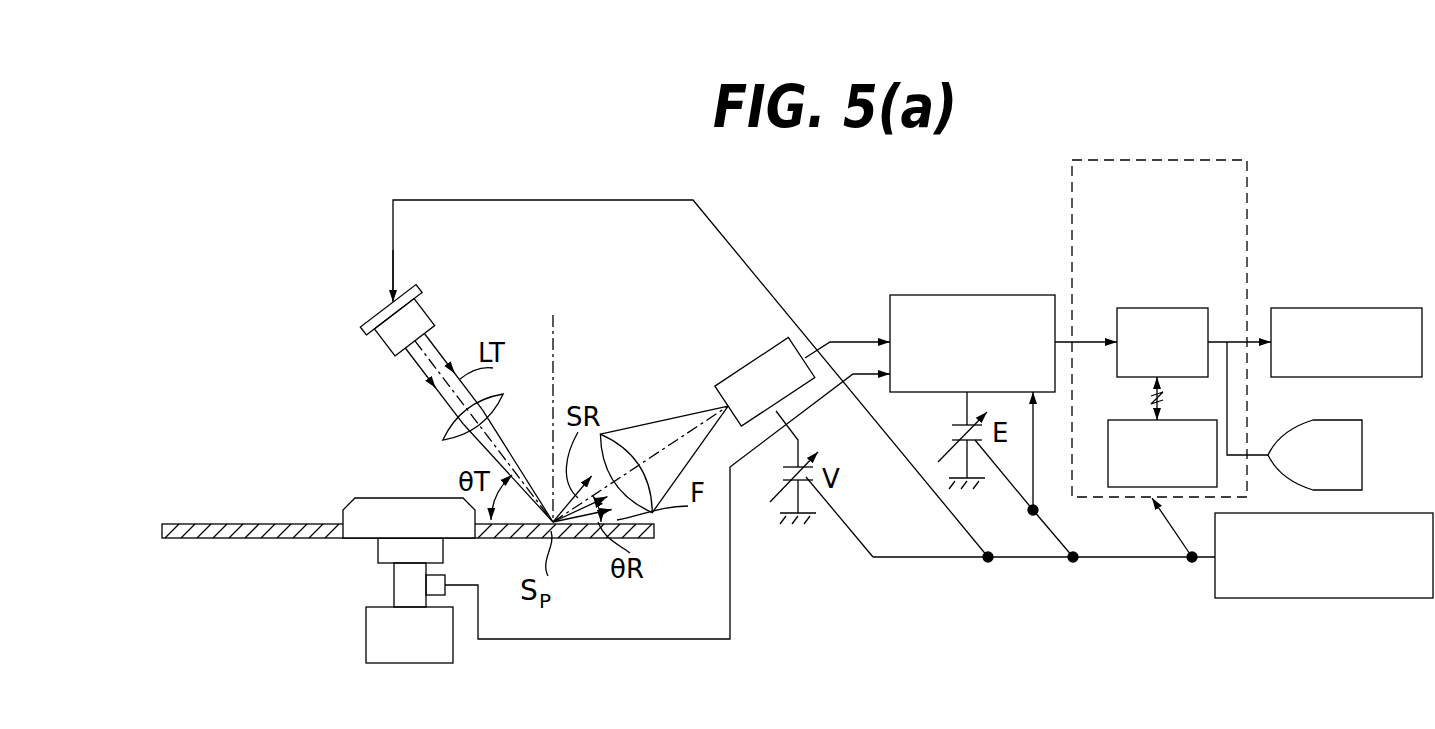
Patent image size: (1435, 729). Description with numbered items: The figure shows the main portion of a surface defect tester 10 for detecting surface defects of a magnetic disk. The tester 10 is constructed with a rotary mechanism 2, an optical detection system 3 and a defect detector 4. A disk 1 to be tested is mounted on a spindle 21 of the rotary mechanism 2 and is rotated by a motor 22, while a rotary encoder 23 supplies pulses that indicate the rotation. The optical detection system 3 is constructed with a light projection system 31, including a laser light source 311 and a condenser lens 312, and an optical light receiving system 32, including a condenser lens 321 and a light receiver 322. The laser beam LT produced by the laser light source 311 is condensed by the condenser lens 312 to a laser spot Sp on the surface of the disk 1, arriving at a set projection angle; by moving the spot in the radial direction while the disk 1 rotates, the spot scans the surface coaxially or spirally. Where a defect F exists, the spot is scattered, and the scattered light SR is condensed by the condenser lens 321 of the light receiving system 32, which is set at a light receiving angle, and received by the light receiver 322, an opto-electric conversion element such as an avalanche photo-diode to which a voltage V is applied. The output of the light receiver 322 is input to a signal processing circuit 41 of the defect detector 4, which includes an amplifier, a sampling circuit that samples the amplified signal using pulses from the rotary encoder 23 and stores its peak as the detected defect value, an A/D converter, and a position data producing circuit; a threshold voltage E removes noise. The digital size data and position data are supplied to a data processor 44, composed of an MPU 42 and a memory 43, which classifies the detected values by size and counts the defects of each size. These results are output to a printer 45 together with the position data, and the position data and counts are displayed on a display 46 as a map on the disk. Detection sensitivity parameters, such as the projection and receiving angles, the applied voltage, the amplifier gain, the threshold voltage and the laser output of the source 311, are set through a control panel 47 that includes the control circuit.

The surface defect tester 10 is at (598, 163).
The disk 1 is at (195, 522).
The rotary mechanism 2 is at (388, 590).
The spindle 21 is at (360, 498).
The motor 22 is at (408, 663).
The rotary encoder 23 is at (441, 582).
The optical detection system 3 is at (535, 376).
The light projection system 31 is at (404, 377).
The laser light source 311 is at (385, 349).
The condenser lens 312 is at (446, 437).
The optical light receiving system 32 is at (684, 376).
The condenser lens 321 is at (607, 440).
The light receiver 322 is at (756, 356).
The defect detector 4 is at (972, 275).
The signal processing circuit 41 is at (936, 295).
The MPU 42 is at (1165, 308).
The memory 43 is at (1128, 487).
The data processor 44 is at (1159, 353).
The printer 45 is at (1320, 308).
The display 46 is at (1365, 441).
The control panel 47 is at (1280, 598).